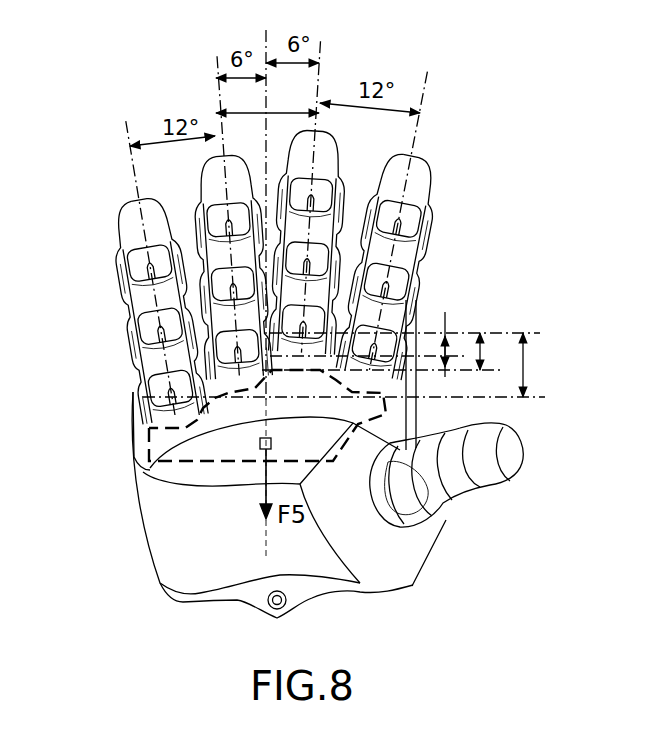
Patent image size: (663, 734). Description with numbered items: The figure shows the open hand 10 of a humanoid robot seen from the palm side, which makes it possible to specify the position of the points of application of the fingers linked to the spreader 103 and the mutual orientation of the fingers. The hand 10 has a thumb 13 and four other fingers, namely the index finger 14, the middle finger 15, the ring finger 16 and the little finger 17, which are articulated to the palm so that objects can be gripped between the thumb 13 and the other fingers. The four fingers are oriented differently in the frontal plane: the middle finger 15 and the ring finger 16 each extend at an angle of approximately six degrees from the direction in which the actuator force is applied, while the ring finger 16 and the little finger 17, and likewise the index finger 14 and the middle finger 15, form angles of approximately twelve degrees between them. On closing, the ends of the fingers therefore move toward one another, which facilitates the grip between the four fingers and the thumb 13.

The hand 10 is at (106, 534).
The thumb 13 is at (512, 442).
The index finger 14 is at (420, 170).
The middle finger 15 is at (325, 145).
The ring finger 16 is at (212, 162).
The little finger 17 is at (122, 203).
The spreader 103 is at (155, 457).